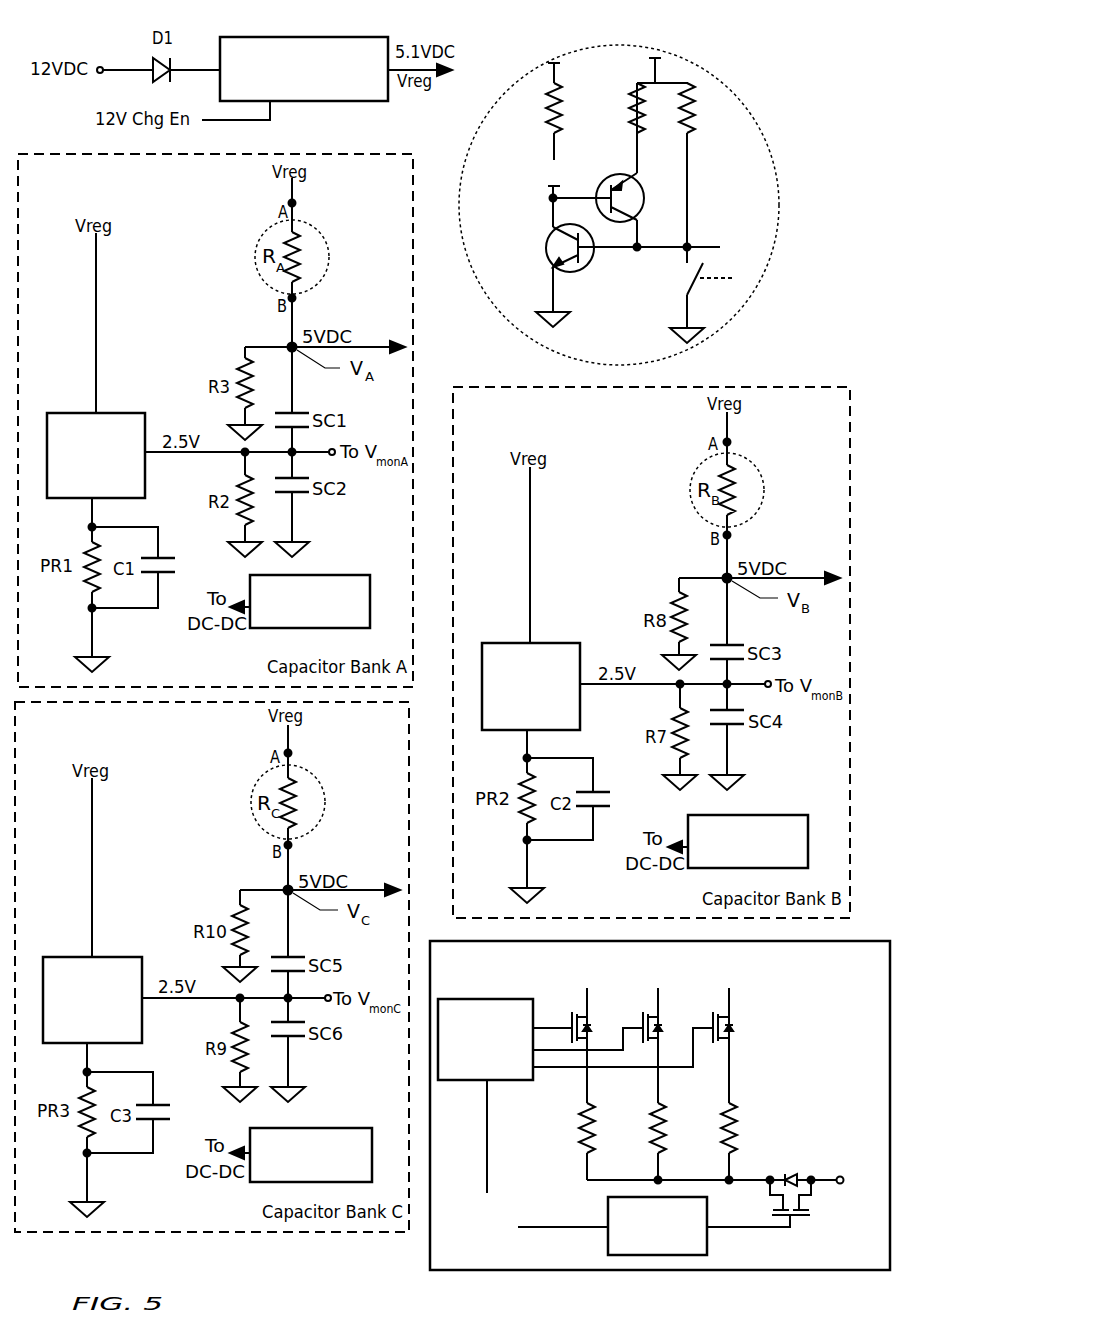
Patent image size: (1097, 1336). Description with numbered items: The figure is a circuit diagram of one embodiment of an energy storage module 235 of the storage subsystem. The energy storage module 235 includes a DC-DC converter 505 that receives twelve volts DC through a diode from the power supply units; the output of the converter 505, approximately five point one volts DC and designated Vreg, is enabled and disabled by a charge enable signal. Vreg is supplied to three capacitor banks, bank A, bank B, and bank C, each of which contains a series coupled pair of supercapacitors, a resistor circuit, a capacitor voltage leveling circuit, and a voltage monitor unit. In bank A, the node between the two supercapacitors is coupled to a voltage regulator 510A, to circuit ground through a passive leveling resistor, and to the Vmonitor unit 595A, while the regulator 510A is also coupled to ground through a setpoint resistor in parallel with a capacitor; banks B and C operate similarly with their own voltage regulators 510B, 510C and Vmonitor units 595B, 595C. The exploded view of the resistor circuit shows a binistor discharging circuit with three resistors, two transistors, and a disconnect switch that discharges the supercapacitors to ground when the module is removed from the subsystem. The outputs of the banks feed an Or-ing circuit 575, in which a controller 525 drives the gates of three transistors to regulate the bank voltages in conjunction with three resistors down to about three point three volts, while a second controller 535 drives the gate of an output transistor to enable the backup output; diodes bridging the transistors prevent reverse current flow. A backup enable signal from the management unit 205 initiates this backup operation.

The DC-DC converter 505 is at (320, 90).
The energy storage module 235 is at (767, 49).
The voltage regulator 510A is at (113, 477).
The voltage regulator 510B is at (548, 711).
The voltage regulator 510C is at (110, 1024).
The voltage monitor unit 595A is at (330, 626).
The voltage monitor unit 595B is at (768, 866).
The voltage monitor unit 595C is at (330, 1179).
The Or-ing circuit 575 is at (880, 971).
The controller 525 is at (500, 1062).
The controller 535 is at (670, 1251).
The management unit 205 is at (530, 1230).